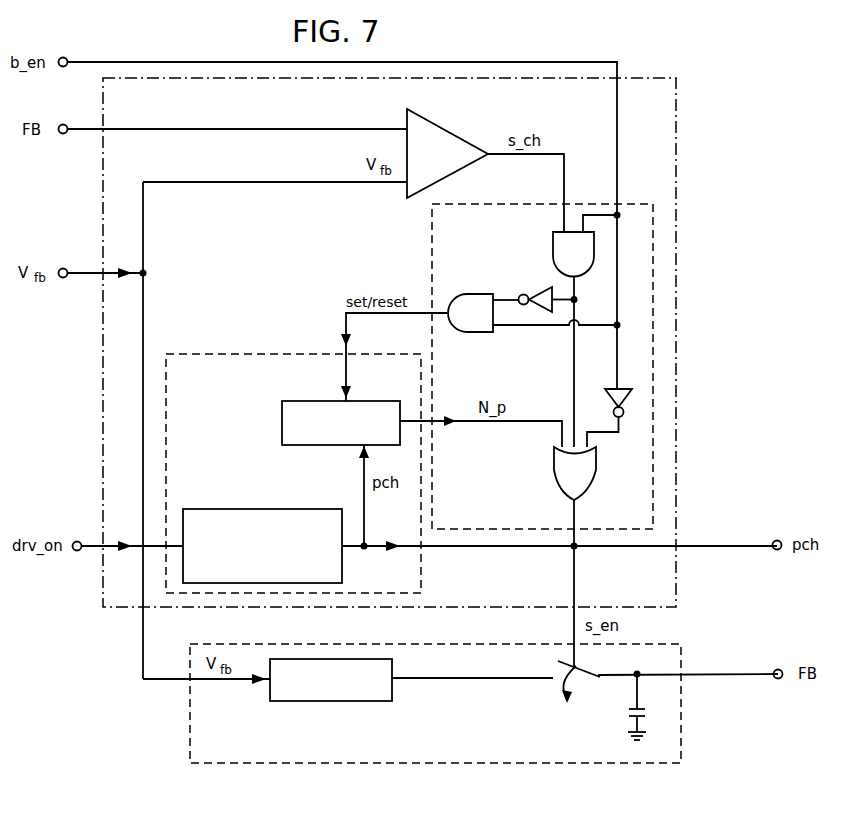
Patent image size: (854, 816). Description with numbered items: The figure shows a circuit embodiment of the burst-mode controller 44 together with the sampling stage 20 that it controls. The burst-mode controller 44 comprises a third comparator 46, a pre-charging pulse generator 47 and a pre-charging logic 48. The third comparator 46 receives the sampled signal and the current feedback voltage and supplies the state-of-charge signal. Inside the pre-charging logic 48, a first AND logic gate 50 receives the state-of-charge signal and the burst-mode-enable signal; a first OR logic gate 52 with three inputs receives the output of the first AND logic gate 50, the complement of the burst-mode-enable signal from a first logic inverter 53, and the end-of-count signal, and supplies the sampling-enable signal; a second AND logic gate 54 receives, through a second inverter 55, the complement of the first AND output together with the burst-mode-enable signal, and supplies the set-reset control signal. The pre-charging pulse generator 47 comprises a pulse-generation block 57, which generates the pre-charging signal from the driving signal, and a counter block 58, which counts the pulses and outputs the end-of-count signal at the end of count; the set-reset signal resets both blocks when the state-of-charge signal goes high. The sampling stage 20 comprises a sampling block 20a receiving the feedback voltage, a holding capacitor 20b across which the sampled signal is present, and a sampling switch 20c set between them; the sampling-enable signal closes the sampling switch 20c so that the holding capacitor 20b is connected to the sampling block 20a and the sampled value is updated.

The burst-mode controller 44 is at (658, 62).
The third comparator 46 is at (455, 136).
The pre-charging logic 48 is at (668, 236).
The first AND logic gate 50 is at (553, 247).
The second inverter 55 is at (545, 289).
The second AND logic gate 54 is at (478, 333).
The first logic inverter 53 is at (626, 410).
The first OR logic gate 52 is at (556, 478).
The pre-charging pulse generator 47 is at (266, 340).
The pulse-generation block 57 is at (238, 508).
The counter block 58 is at (316, 446).
The sampling stage 20 is at (697, 646).
The sampling block 20a is at (393, 701).
The holding capacitor 20b is at (648, 712).
The sampling switch 20c is at (592, 681).